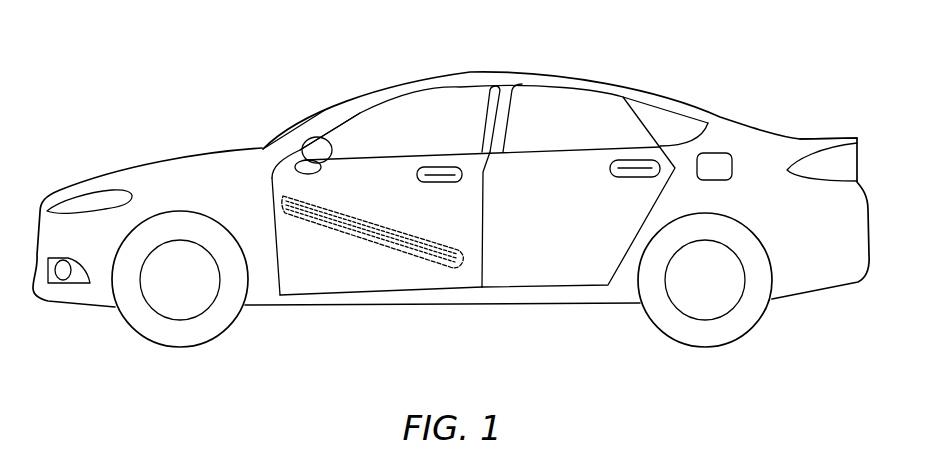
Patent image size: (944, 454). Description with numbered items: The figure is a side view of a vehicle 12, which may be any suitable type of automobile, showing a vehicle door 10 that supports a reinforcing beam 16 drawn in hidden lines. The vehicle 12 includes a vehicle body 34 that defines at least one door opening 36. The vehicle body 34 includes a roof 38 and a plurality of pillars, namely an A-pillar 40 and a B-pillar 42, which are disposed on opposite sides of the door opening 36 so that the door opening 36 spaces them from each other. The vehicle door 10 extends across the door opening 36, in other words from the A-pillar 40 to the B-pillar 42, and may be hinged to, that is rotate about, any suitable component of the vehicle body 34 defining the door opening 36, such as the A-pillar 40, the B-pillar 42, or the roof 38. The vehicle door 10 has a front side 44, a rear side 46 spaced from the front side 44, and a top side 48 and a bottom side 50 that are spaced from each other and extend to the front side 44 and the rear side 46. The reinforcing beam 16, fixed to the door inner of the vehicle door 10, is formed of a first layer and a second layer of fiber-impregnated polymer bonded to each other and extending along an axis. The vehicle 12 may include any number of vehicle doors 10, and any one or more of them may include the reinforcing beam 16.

The vehicle door 10 is at (399, 206).
The vehicle 12 is at (213, 122).
The reinforcing beam 16 is at (400, 257).
The vehicle body 34 is at (637, 88).
The door opening 36 is at (375, 125).
The roof 38 is at (473, 75).
The A-pillar 40 is at (297, 143).
The B-pillar 42 is at (507, 115).
The front side 44 is at (268, 203).
The rear side 46 is at (482, 203).
The top side 48 is at (418, 167).
The bottom side 50 is at (340, 295).